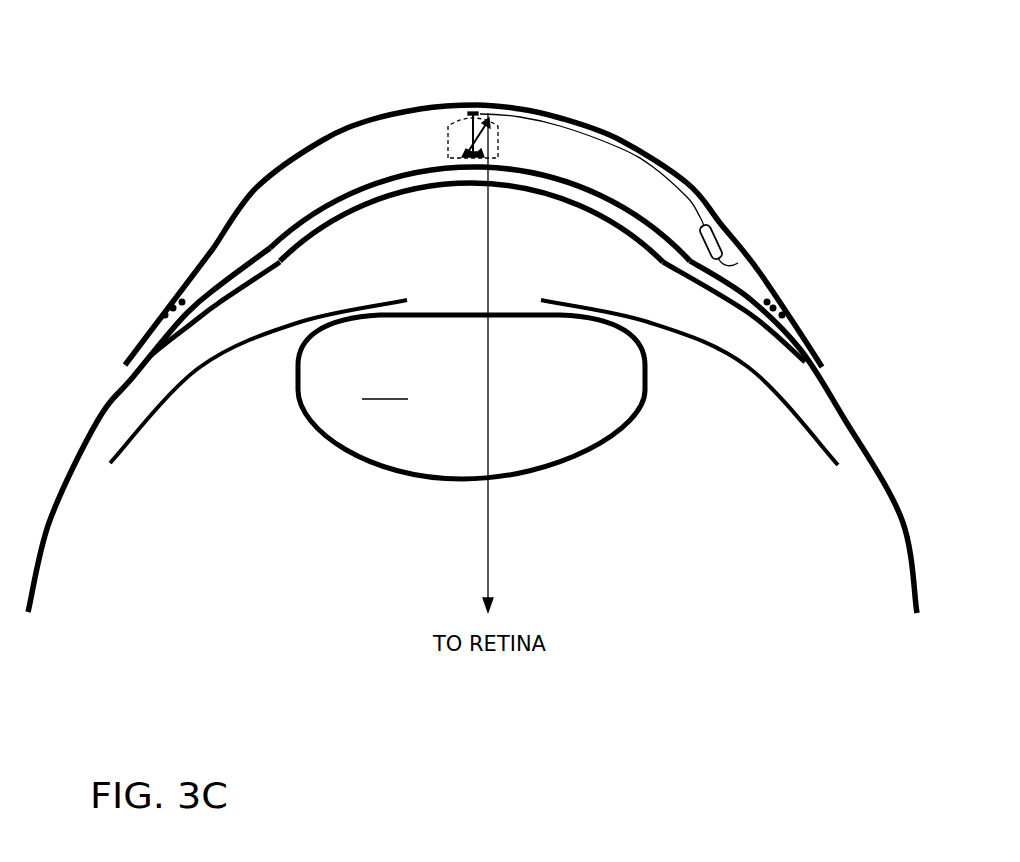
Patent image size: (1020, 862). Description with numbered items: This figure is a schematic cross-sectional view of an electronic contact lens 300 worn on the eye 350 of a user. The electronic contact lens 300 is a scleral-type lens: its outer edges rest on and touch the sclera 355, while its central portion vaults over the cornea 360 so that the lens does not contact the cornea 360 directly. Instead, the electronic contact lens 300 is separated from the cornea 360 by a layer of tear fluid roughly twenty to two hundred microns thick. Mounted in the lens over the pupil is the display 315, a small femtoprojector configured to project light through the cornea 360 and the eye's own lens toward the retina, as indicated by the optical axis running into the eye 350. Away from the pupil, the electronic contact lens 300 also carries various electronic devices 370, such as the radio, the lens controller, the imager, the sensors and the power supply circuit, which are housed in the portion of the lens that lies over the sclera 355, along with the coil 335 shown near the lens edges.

The electronic contact lens 300 is at (444, 104).
The display 315 is at (501, 132).
The coil 335 is at (788, 303).
The eye 350 is at (733, 549).
The sclera 355 is at (740, 320).
The cornea 360 is at (417, 198).
The electronic devices 370 is at (727, 247).